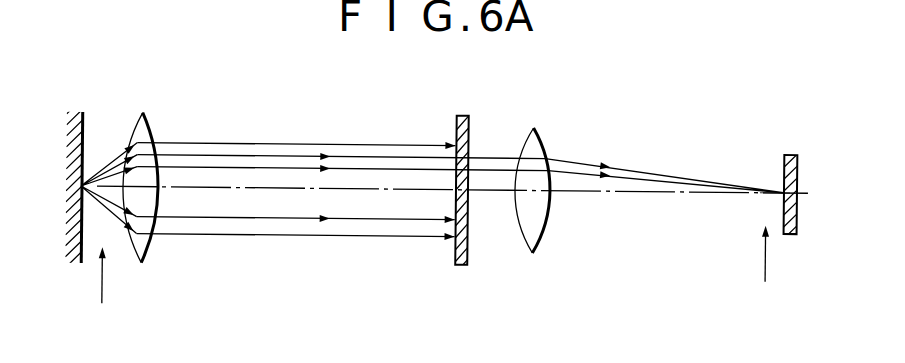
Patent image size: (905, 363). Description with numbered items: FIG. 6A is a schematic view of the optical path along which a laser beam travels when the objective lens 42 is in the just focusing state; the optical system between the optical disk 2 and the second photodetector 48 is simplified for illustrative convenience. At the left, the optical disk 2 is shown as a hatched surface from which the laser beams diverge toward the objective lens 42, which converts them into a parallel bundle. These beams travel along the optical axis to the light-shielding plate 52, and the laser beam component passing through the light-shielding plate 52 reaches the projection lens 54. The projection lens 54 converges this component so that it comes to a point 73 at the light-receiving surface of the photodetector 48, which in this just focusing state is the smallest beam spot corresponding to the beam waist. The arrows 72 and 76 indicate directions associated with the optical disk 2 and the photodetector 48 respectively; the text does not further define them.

The optical disk 2 is at (87, 131).
The objective lens 42 is at (144, 127).
The light-shielding plate 52 is at (459, 111).
The projection lens 54 is at (541, 140).
The second photodetector 48 is at (789, 147).
The focal point 73 is at (676, 188).
The direction arrow 72 is at (104, 297).
The direction arrow 76 is at (766, 268).